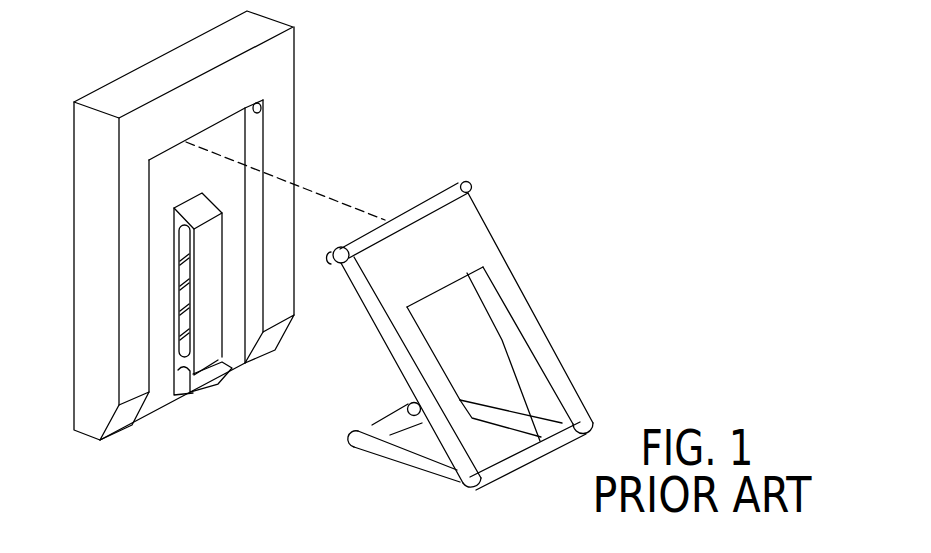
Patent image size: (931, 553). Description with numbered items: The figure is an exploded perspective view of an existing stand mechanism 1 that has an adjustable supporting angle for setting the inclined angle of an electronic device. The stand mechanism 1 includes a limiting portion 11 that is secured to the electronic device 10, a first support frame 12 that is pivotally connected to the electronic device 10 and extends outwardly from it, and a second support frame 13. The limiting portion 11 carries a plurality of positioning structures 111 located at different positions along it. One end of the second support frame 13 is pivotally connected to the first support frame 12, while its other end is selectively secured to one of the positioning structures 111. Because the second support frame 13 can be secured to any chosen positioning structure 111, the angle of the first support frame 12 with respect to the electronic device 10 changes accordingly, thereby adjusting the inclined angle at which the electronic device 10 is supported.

The stand mechanism 1 is at (513, 88).
The electronic device 10 is at (172, 68).
The limiting portion 11 is at (134, 315).
The positioning structures 111 is at (180, 309).
The first support frame 12 is at (527, 322).
The second support frame 13 is at (370, 446).